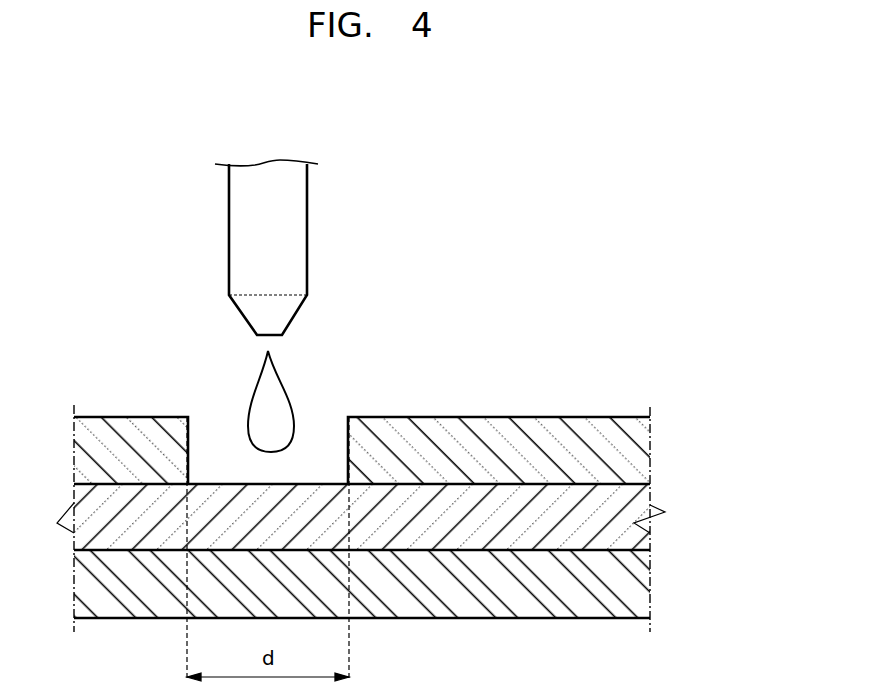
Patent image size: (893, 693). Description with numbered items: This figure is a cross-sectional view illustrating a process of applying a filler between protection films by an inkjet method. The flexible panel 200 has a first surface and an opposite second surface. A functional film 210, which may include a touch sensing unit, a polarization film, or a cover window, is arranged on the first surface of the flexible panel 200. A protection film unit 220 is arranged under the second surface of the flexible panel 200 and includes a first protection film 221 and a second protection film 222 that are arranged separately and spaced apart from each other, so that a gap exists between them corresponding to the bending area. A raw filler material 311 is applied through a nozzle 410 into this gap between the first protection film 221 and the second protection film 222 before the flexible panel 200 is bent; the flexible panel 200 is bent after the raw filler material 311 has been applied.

The nozzle 410 is at (300, 218).
The raw filler material 311 is at (280, 403).
The protection film unit 220 is at (420, 424).
The second protection film 222 is at (122, 432).
The first protection film 221 is at (505, 432).
The flexible panel 200 is at (650, 533).
The functional film 210 is at (650, 587).